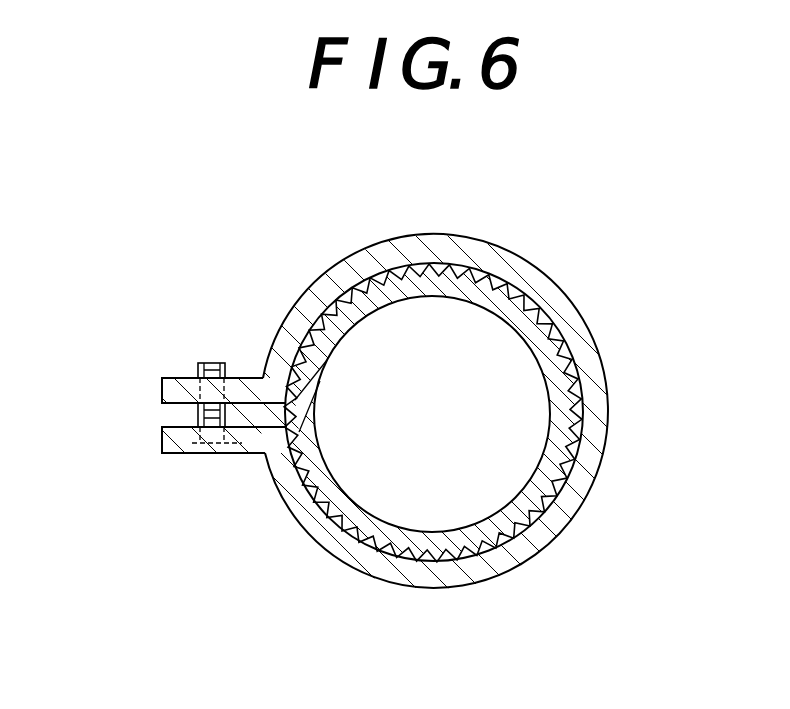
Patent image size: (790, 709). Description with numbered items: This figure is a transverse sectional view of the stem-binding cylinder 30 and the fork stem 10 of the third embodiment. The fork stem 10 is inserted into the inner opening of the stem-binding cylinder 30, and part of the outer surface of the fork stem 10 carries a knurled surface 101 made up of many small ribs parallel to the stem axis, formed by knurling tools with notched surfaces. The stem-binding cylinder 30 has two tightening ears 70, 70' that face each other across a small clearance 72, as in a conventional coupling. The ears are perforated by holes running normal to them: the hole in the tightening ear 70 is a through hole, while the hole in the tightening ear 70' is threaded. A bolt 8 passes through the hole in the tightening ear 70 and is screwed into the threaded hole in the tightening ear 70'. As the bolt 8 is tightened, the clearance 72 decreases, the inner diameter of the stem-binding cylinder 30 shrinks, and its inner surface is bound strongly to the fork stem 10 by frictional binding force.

The fork stem 10 is at (395, 383).
The knurled surface 101 is at (549, 335).
The stem-binding cylinder 30 is at (395, 420).
The clearance 72 is at (260, 415).
The tightening ear 70 is at (204, 486).
The tightening ear 70' is at (209, 340).
The bolt 8 is at (200, 421).